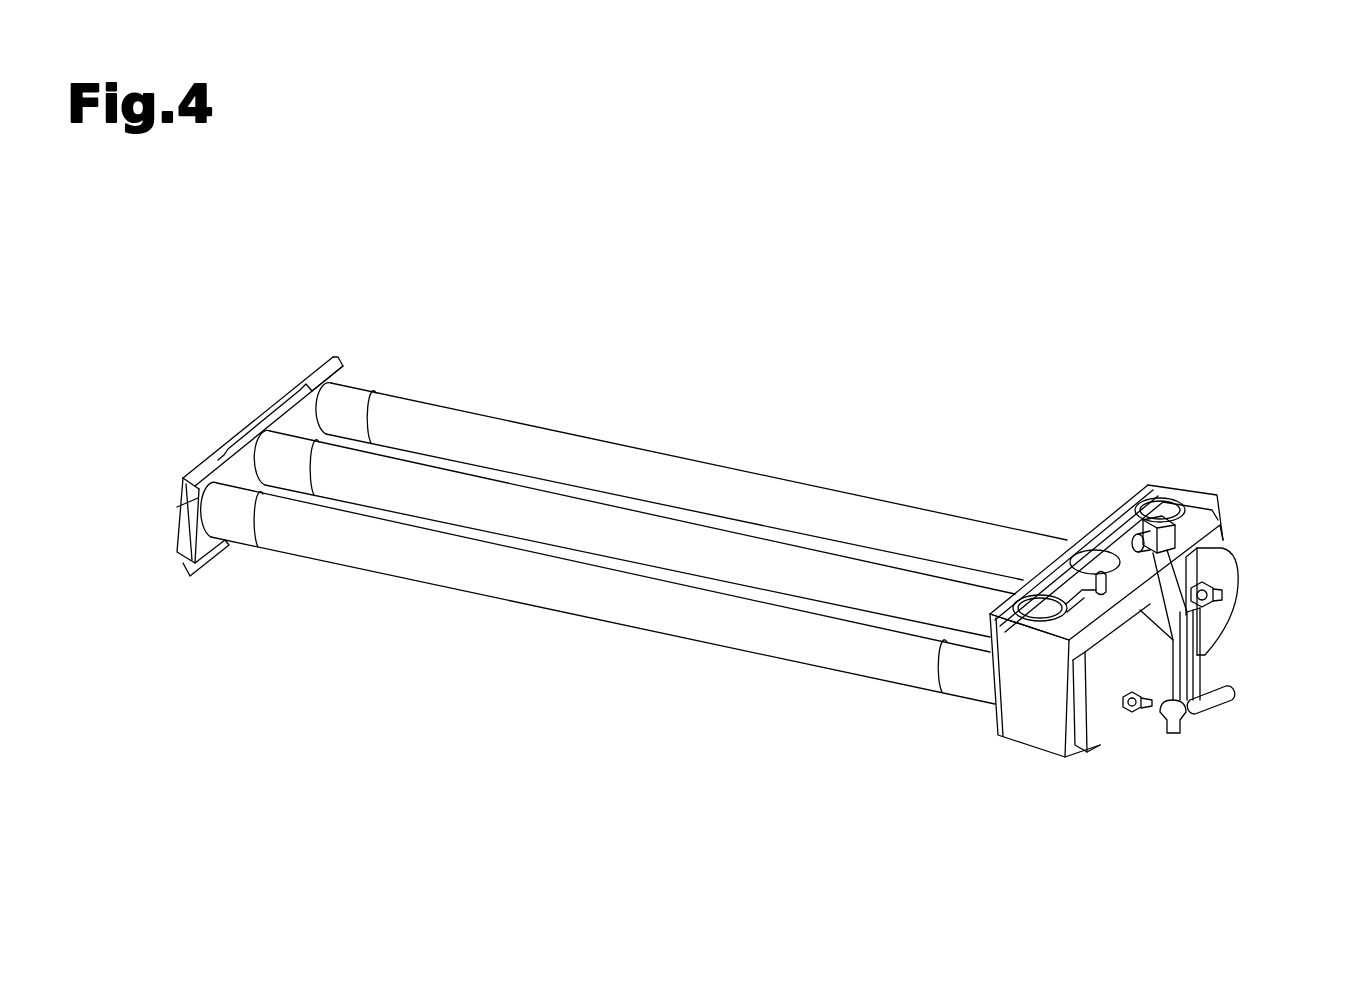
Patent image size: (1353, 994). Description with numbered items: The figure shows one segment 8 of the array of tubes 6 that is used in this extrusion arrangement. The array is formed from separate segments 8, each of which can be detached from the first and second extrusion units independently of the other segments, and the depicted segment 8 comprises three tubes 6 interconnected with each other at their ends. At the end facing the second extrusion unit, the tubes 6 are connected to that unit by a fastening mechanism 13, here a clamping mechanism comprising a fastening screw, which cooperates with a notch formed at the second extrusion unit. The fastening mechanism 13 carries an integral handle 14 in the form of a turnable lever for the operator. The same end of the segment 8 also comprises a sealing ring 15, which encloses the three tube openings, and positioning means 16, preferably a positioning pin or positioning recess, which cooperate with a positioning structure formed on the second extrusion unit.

The tubes 6 is at (617, 602).
The segment 8 is at (540, 688).
The fastening mechanism 13 is at (1200, 582).
The handle 14 is at (1213, 700).
The sealing ring 15 is at (1132, 486).
The positioning means 16 is at (1102, 595).